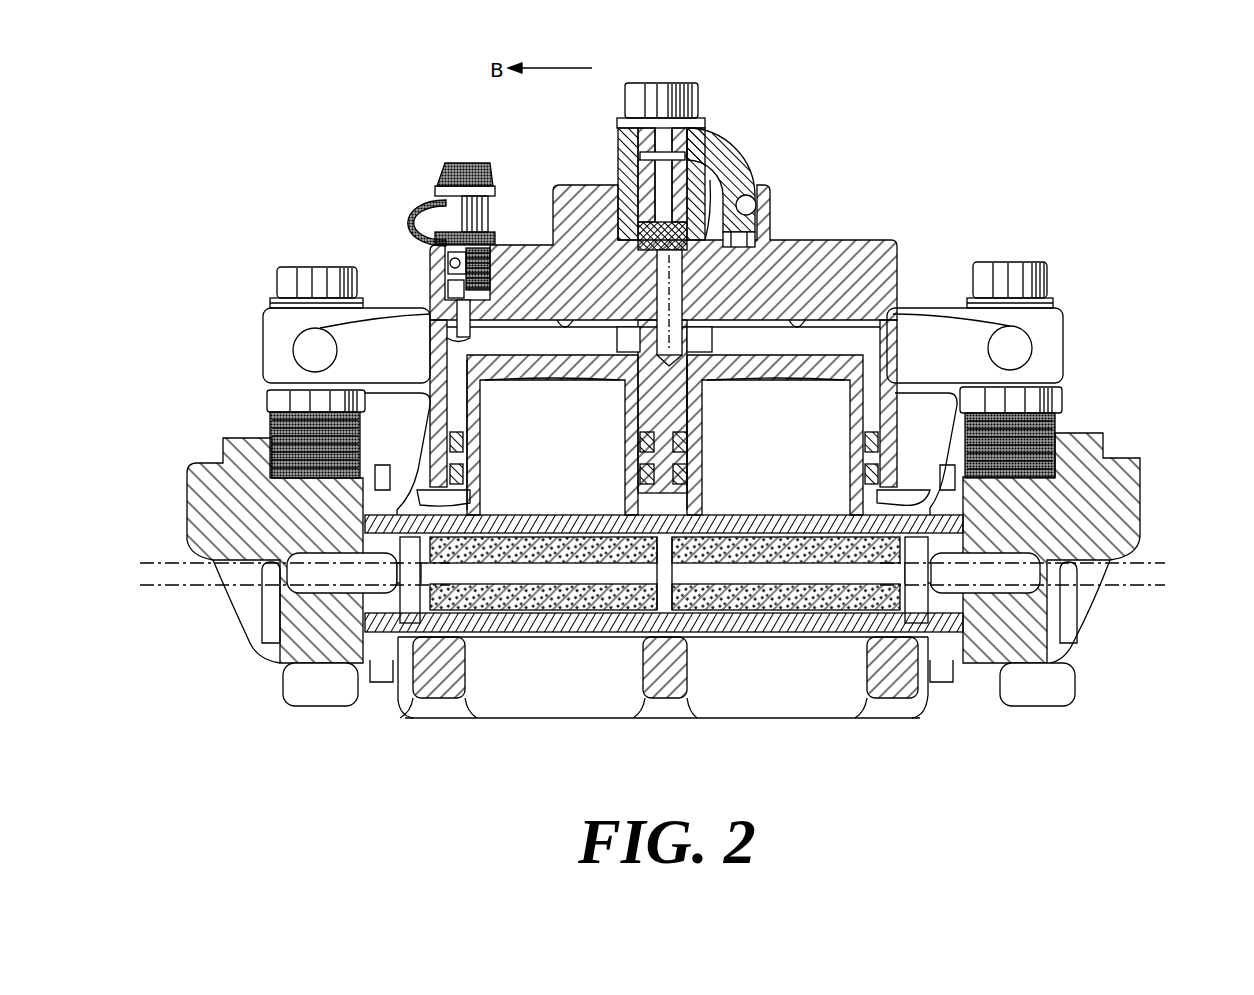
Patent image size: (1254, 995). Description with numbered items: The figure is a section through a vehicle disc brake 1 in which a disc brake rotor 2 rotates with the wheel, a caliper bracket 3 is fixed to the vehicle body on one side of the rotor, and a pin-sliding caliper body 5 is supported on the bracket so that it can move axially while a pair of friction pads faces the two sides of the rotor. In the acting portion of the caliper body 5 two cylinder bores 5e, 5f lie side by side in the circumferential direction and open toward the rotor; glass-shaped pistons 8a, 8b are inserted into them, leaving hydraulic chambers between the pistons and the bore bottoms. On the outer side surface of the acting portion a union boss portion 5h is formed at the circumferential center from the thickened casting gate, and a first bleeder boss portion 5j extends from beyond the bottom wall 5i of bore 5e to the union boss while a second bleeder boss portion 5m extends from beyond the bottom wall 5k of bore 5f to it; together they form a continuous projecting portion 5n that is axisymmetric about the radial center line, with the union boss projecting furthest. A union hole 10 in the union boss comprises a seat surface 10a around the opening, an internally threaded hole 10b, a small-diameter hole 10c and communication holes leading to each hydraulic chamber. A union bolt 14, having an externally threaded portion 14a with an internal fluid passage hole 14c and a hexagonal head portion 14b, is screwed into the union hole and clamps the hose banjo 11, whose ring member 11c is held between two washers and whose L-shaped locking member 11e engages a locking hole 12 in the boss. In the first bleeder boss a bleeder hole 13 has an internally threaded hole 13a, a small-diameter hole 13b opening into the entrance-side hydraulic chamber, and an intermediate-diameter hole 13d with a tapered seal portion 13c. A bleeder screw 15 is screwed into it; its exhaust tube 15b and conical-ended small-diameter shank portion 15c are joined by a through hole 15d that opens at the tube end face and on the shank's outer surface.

The vehicle disc brake 1 is at (671, 47).
The disc brake rotor 2 is at (1165, 588).
The caliper bracket 3 is at (1155, 488).
The caliper body 5 is at (936, 298).
The cylinder bore 5e is at (478, 412).
The cylinder bore 5f is at (700, 412).
The union boss portion 5h is at (553, 192).
The bottom wall 5i is at (570, 327).
The first bleeder boss portion 5j is at (512, 245).
The bottom wall 5k is at (797, 330).
The second bleeder boss portion 5m is at (869, 245).
The continuous projecting portion 5n is at (834, 232).
The piston 8a is at (630, 428).
The piston 8b is at (848, 430).
The union hole 10 is at (688, 292).
The seat surface 10a is at (704, 238).
The internally threaded hole 10b is at (648, 242).
The small-diameter hole 10c is at (662, 282).
The hose banjo 11 is at (747, 144).
The ring member 11c is at (620, 140).
The L-shaped locking member 11e is at (755, 172).
The locking hole 12 is at (756, 204).
The bleeder hole 13 is at (448, 248).
The internally threaded hole 13a is at (447, 268).
The small-diameter hole 13b is at (468, 335).
The tapered seal portion 13c is at (445, 322).
The intermediate-diameter hole 13d is at (490, 280).
The union bolt 14 is at (606, 105).
The externally threaded portion 14a is at (640, 212).
The hexagonal head portion 14b is at (700, 100).
The fluid passage hole 14c is at (640, 158).
The bleeder screw 15 is at (430, 175).
The exhaust tube 15b is at (452, 213).
The small-diameter shank portion 15c is at (448, 291).
The through hole 15d is at (489, 298).